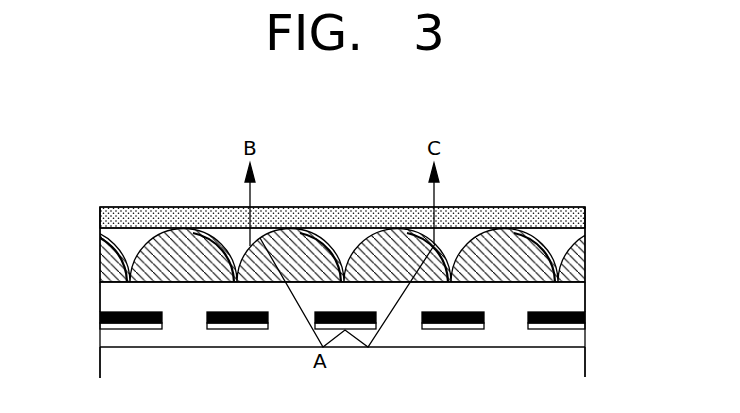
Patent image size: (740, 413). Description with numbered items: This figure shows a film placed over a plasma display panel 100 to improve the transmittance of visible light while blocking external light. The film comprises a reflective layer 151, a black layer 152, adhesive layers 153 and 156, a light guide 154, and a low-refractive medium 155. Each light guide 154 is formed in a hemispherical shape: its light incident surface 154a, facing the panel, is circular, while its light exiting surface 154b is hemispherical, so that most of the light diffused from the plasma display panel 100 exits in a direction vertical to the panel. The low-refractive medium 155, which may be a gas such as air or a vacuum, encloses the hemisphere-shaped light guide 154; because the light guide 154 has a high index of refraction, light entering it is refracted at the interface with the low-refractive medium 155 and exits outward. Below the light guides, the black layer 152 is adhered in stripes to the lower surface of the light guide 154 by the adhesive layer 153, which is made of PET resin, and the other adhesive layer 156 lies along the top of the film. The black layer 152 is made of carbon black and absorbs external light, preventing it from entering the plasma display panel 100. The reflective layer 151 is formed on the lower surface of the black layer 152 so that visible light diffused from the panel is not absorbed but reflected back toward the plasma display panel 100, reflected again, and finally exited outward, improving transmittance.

The plasma display panel 100 is at (113, 367).
The reflective layer 151 is at (100, 328).
The black layer 152 is at (100, 318).
The adhesive layer 153 is at (112, 295).
The light guide 154 is at (100, 232).
The light incident surface 154a is at (535, 282).
The light exiting surface 154b is at (530, 228).
The low-refractive medium 155 is at (228, 236).
The adhesive layer 156 is at (152, 209).